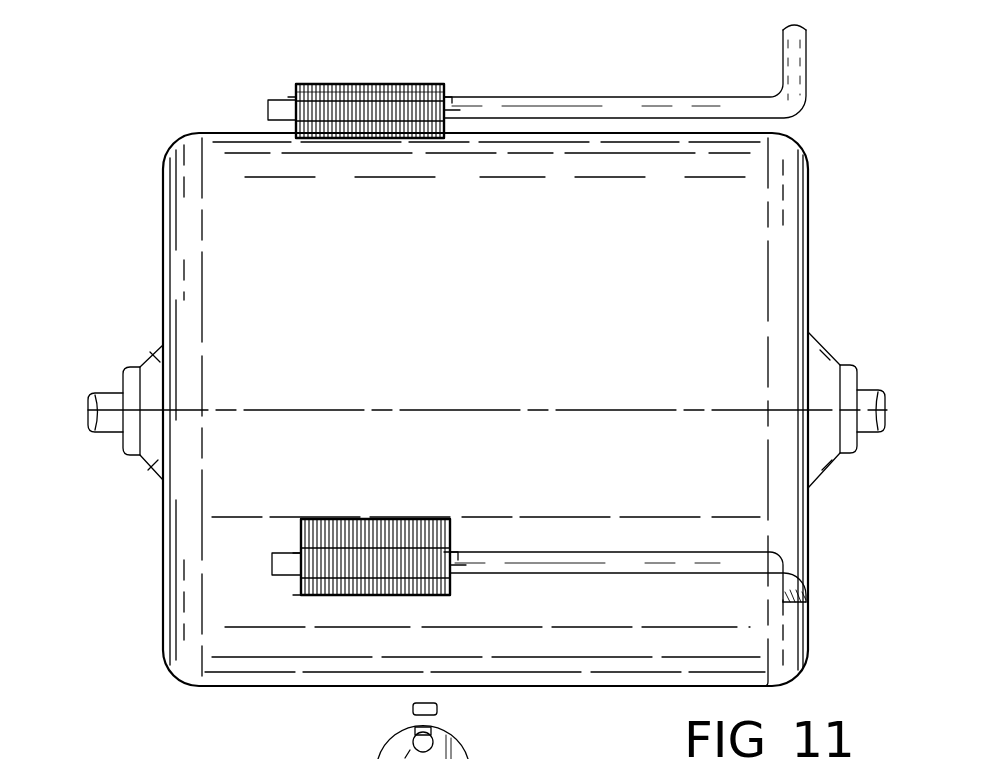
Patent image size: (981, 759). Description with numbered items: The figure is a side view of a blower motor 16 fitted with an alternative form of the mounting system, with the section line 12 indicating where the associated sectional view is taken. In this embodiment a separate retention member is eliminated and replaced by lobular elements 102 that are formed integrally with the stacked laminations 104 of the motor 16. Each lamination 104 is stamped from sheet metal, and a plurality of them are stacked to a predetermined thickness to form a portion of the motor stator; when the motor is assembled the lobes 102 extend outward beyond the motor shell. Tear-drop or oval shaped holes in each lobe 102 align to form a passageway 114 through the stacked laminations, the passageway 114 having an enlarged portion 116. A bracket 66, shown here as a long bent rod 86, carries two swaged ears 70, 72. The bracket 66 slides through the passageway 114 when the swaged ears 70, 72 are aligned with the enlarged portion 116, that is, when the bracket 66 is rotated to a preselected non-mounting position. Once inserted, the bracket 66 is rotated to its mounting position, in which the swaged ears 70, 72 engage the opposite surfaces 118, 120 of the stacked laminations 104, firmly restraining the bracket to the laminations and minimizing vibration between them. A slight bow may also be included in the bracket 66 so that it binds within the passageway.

The section line 12- 12 is at (72, 30).
The motor 16 is at (790, 212).
The bracket 66 is at (812, 56).
The swaged ear 70 is at (288, 100).
The swaged ear 72 is at (455, 100).
The rod 86 is at (655, 100).
The lobular element 102 is at (412, 88).
The stacked laminations 104 is at (358, 84).
The passageway 114 is at (433, 742).
The enlarged portion 116 is at (395, 742).
The surface of the stacked laminations 118 is at (292, 98).
The surface of the stacked laminations 120 is at (448, 96).